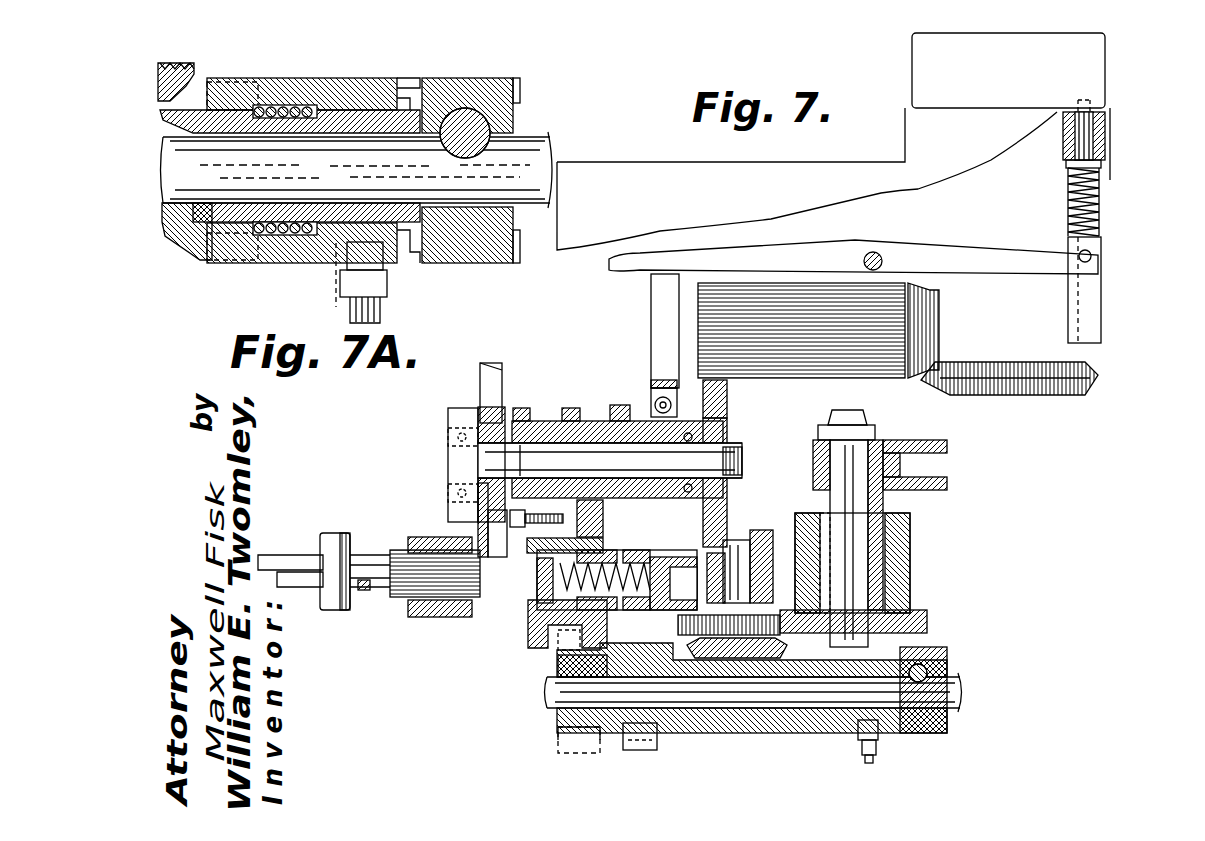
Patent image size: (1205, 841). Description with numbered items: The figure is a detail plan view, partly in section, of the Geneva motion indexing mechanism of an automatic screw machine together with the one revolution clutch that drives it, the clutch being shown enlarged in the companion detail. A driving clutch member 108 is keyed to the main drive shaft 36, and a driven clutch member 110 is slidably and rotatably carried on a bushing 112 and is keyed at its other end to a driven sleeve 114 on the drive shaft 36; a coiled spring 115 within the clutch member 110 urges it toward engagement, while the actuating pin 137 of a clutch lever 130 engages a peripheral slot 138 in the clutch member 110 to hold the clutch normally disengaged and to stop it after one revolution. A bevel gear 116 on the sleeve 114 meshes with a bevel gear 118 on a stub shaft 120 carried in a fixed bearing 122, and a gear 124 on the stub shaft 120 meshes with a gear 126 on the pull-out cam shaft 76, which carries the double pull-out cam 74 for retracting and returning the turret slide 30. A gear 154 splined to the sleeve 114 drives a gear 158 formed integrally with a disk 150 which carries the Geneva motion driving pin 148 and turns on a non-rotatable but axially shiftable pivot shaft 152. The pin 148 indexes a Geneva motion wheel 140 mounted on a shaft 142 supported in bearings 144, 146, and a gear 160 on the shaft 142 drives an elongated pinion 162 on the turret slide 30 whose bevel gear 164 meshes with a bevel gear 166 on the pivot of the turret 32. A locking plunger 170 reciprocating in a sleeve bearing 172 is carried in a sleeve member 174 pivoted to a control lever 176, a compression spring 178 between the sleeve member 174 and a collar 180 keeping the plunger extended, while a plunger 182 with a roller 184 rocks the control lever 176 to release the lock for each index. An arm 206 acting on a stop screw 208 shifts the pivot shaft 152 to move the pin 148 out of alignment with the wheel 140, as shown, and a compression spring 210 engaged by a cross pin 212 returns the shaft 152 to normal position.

In FIG. 7, the turret slide 30 is at (618, 172).
In FIG. 7, the turret 32 is at (1090, 62).
In FIG. 7A, the main drive shaft 36 is at (528, 135).
In FIG. 7, the main drive shaft 36 is at (950, 690).
In FIG. 7, the double pull-out cam 74 is at (935, 488).
In FIG. 7, the pull-out cam shaft 76 is at (830, 452).
In FIG. 7A, the driving clutch member 108 is at (475, 252).
In FIG. 7, the driving clutch member 108 is at (925, 735).
In FIG. 7A, the driven clutch member 110 is at (292, 258).
In FIG. 7, the driven clutch member 110 is at (833, 730).
In FIG. 7A, the bushing 112 is at (243, 222).
In FIG. 7, the bushing 112 is at (800, 730).
In FIG. 7A, the driven sleeve 114 is at (192, 236).
In FIG. 7, the driven sleeve 114 is at (755, 735).
In FIG. 7A, the coiled spring 115 is at (300, 106).
In FIG. 7, the coiled spring 115 is at (846, 745).
In FIG. 7, the bevel gear 116 is at (700, 720).
In FIG. 7A, the bevel gear 118 is at (200, 67).
In FIG. 7, the bevel gear 118 is at (753, 660).
In FIG. 7, the stub shaft 120 is at (735, 550).
In FIG. 7, the fixed bearing 122 is at (765, 540).
In FIG. 7, the gear 124 is at (677, 660).
In FIG. 7, the gear 126 is at (920, 612).
In FIG. 7A, the clutch lever 130 is at (380, 287).
In FIG. 7A, the actuating pin 137 is at (370, 260).
In FIG. 7, the actuating pin 137 is at (878, 748).
In FIG. 7A, the peripheral slot 138 is at (333, 292).
In FIG. 7, the peripheral slot 138 is at (858, 748).
In FIG. 7, the Geneva motion wheel 140 is at (480, 368).
In FIG. 7, the shaft 142 is at (548, 440).
In FIG. 7, the bearing 144 is at (448, 491).
In FIG. 7, the bearing 146 is at (692, 437).
In FIG. 7, the Geneva motion driving pin 148 is at (517, 528).
In FIG. 7, the disk 150 is at (528, 640).
In FIG. 7, the pivot shaft 152 is at (410, 556).
In FIG. 7, the gear 154 is at (558, 735).
In FIG. 7, the gear 158 is at (603, 519).
In FIG. 7, the gear 160 is at (727, 397).
In FIG. 7, the elongated pinion 162 is at (780, 300).
In FIG. 7, the bevel gear 164 is at (940, 312).
In FIG. 7, the bevel gear 166 is at (1012, 365).
In FIG. 7, the locking plunger 170 is at (1105, 128).
In FIG. 7, the sleeve bearing 172 is at (1105, 150).
In FIG. 7, the sleeve member 174 is at (1103, 295).
In FIG. 7, the control lever 176 is at (955, 255).
In FIG. 7, the compression spring 178 is at (1100, 208).
In FIG. 7, the collar 180 is at (1100, 166).
In FIG. 7, the plunger 182 is at (651, 328).
In FIG. 7, the roller 184 is at (655, 400).
In FIG. 7, the arm 206 is at (322, 562).
In FIG. 7, the stop screw 208 is at (364, 592).
In FIG. 7, the compression spring 210 is at (612, 560).
In FIG. 7, the cross pin 212 is at (655, 600).